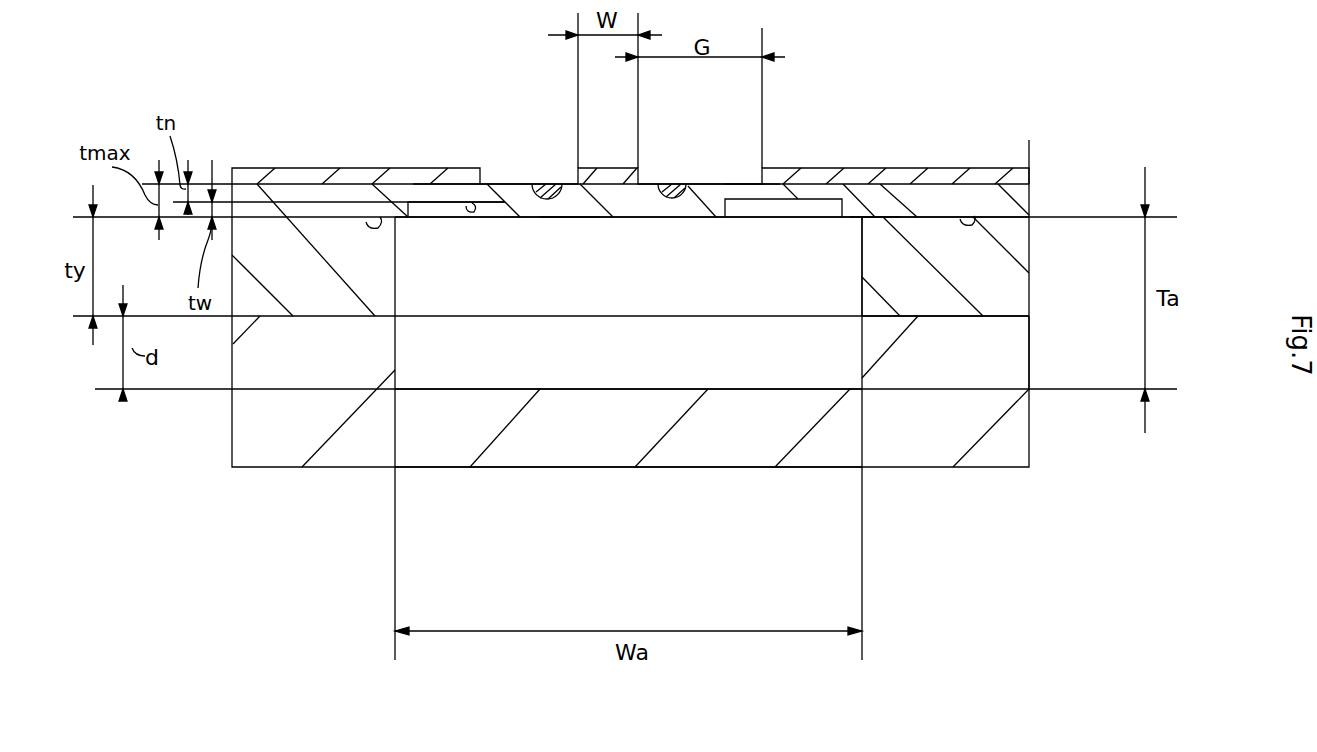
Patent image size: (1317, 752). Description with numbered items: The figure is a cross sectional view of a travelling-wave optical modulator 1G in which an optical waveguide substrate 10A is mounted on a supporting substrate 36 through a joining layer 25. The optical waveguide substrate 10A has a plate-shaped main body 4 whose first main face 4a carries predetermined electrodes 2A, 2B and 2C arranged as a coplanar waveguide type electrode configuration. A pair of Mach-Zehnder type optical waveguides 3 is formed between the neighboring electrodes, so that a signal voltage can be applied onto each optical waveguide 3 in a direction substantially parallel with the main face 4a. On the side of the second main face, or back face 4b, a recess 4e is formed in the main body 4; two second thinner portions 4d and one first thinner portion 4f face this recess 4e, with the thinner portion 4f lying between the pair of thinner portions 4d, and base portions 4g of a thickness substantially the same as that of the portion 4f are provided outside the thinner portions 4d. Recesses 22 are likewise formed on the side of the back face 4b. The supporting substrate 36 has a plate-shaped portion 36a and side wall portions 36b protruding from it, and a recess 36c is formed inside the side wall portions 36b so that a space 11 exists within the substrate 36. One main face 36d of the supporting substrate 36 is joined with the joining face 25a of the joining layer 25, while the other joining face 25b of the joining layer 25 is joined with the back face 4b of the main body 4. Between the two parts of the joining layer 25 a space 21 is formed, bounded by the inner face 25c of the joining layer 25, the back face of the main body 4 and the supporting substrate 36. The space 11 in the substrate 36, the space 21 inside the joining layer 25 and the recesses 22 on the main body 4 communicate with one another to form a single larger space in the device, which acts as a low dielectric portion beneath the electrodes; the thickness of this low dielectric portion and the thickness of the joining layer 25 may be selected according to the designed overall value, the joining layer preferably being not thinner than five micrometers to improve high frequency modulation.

The electrode 2A is at (345, 171).
The electrode 2B is at (600, 171).
The electrode 2C is at (805, 172).
The optical waveguide 3 is at (541, 182).
The main body 4 is at (1040, 205).
The first main face 4a is at (868, 190).
The second main face (back face) 4b is at (380, 217).
The second thinner portion 4d is at (428, 192).
The recess 4e is at (470, 206).
The first thinner portion 4f is at (572, 200).
The base portion 4g is at (257, 203).
The recess 22 is at (770, 216).
The travelling-wave optical modulator 1G is at (1032, 143).
The optical waveguide substrate 10A is at (1040, 176).
The joining layer 25 is at (1018, 293).
The joining face 25a is at (923, 316).
The joining face 25b is at (1003, 232).
The inner face 25c is at (862, 268).
The space 21 is at (628, 300).
The space 11 is at (646, 367).
The supporting substrate 36 is at (1050, 443).
The plate-shaped portion 36a is at (910, 452).
The side wall portion 36b is at (1015, 358).
The recess 36c is at (724, 378).
The main face 36d is at (345, 314).